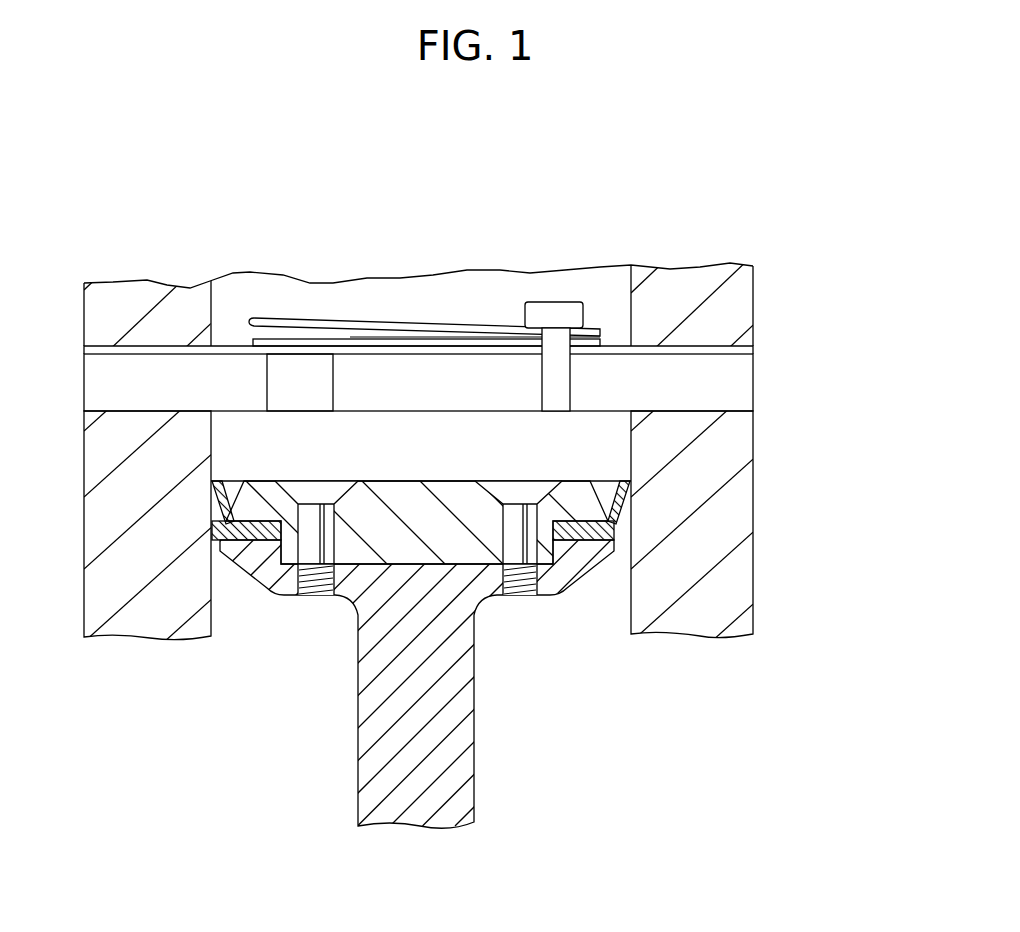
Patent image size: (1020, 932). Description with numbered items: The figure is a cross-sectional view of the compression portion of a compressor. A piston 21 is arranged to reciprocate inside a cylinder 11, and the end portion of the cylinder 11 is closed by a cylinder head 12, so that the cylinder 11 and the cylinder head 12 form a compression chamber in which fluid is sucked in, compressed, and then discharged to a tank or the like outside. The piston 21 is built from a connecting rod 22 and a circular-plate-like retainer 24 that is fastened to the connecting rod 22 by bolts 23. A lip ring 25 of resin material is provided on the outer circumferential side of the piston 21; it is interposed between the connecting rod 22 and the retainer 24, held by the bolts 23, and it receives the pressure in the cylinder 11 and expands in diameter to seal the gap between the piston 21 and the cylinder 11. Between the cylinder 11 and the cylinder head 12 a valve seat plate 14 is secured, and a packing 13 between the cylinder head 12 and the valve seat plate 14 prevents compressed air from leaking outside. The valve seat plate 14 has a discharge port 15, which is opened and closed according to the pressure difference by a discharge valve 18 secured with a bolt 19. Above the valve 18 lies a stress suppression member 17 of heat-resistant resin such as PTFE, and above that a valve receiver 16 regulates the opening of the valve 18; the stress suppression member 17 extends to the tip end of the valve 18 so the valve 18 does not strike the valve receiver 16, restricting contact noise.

The cylinder 11 is at (127, 632).
The cylinder head 12 is at (733, 312).
The packing 13 is at (755, 349).
The valve seat plate 14 is at (735, 390).
The discharge port 15 is at (265, 378).
The valve receiver 16 is at (262, 319).
The stress suppression member 17 is at (281, 337).
The valve 18 is at (465, 348).
The bolt 19 is at (567, 301).
The piston 21 is at (262, 500).
The connecting rod 22 is at (473, 677).
The bolts 23 is at (320, 480).
The retainer 24 is at (390, 478).
The lip ring 25 is at (630, 508).